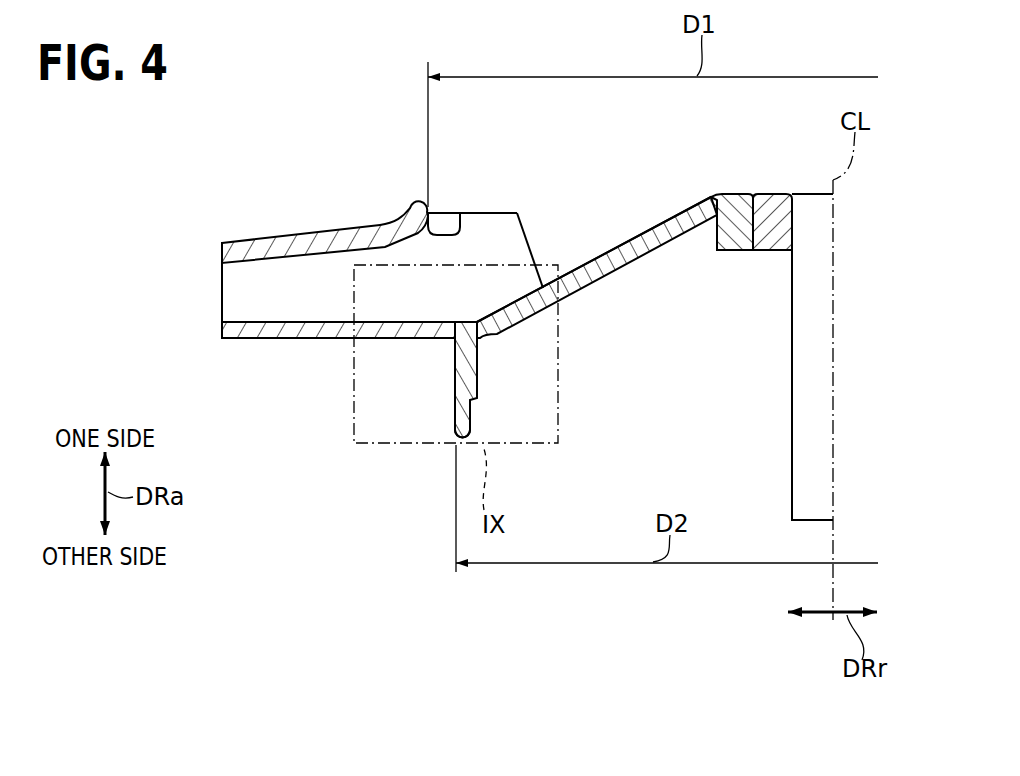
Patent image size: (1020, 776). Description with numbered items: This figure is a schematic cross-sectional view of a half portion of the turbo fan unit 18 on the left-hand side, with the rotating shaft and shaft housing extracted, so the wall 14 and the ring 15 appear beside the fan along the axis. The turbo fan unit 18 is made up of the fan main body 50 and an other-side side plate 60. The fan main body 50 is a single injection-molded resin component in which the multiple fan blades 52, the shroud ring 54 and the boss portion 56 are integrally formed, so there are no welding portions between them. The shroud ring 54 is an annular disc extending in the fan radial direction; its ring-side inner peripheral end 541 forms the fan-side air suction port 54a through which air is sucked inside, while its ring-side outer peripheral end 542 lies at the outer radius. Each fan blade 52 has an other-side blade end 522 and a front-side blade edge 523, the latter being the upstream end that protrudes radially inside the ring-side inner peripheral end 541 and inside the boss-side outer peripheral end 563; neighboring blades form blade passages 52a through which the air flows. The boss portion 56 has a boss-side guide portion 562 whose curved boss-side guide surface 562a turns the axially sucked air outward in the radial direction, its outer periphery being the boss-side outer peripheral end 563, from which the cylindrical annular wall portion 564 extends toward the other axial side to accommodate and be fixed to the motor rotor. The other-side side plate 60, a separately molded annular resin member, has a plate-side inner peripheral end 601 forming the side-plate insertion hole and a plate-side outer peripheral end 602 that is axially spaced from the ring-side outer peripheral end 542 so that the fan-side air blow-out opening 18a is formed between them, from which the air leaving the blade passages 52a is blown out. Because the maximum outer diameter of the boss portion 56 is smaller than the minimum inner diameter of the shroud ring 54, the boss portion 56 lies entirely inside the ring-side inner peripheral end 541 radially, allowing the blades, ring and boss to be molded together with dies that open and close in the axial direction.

The housing wall 14 is at (813, 208).
The ring member 15 is at (770, 203).
The turbo fan unit 18 is at (352, 169).
The fan-side air blow-out opening 18a is at (229, 288).
The fan main body 50 is at (577, 324).
The fan blades 52 is at (293, 405).
The blade passages 52a is at (322, 309).
The shroud ring 54 is at (302, 232).
The fan-side air suction port 54a is at (610, 217).
The boss portion 56 is at (611, 224).
The other-side side plate 60 is at (270, 333).
The other-side blade end 522 is at (292, 339).
The front-side blade edge 523 is at (518, 212).
The ring-side inner peripheral end 541 is at (463, 220).
The ring-side outer peripheral end 542 is at (221, 242).
The boss-side guide portion 562 is at (657, 228).
The boss-side guide surface 562a is at (633, 241).
The boss-side outer peripheral end 563 is at (453, 334).
The annular wall portion 564 is at (453, 402).
The plate-side inner peripheral end 601 is at (398, 334).
The plate-side outer peripheral end 602 is at (222, 337).